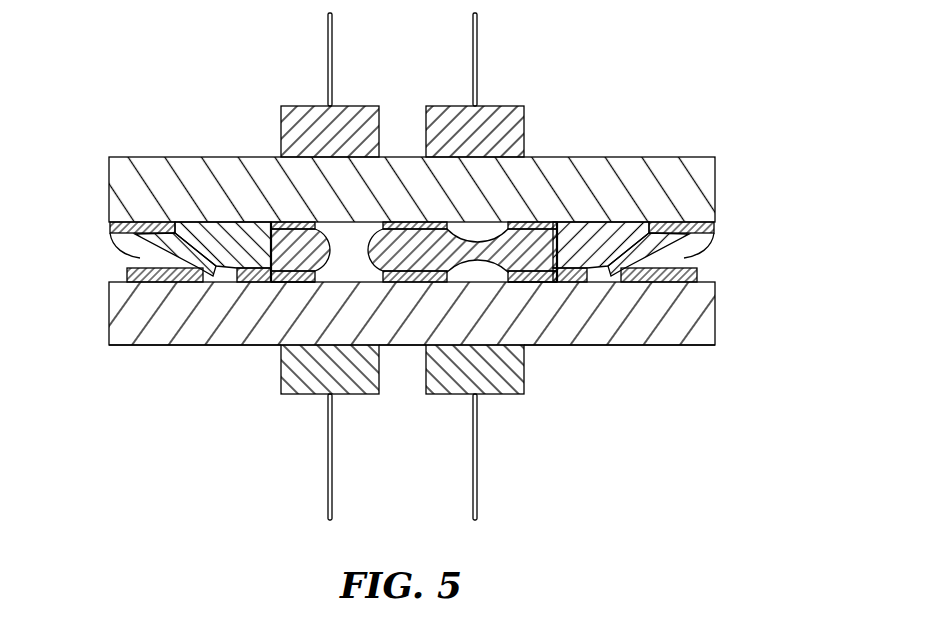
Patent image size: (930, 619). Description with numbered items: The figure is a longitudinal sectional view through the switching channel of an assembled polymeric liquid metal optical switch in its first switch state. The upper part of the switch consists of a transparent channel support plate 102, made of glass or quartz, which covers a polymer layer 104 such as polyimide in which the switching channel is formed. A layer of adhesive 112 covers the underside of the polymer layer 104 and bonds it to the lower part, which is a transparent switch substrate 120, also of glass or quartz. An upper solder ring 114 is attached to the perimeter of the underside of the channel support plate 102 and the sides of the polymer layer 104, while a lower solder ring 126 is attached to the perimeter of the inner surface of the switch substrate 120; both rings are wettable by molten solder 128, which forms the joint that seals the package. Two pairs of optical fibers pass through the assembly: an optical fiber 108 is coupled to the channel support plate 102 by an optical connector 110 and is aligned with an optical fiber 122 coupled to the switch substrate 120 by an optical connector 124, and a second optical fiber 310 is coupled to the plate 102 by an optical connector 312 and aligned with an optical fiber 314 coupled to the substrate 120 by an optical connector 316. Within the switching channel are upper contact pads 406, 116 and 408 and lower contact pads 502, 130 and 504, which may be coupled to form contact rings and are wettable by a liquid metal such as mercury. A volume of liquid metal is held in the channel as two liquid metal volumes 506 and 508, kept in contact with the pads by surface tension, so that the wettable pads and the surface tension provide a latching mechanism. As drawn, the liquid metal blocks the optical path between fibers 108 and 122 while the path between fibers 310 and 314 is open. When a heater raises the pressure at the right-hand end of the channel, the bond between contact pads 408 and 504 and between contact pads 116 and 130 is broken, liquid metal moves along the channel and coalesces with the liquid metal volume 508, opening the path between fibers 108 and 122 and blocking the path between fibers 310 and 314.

The transparent channel support plate 102 is at (700, 157).
The polymer layer 104 is at (198, 230).
The optical fiber 108 is at (478, 68).
The optical connector 110 is at (463, 106).
The layer of adhesive 112 is at (188, 345).
The upper solder ring 114 is at (110, 224).
The upper contact pad 116 is at (412, 229).
The transparent switch substrate 120 is at (717, 344).
The optical fiber 122 is at (478, 439).
The optical connector 124 is at (458, 395).
The lower solder ring 126 is at (124, 277).
The molten solder 128 is at (127, 258).
The wettable contact pad 130 is at (403, 346).
The second optical fiber 310 is at (333, 66).
The optical connector 312 is at (293, 106).
The optical fiber 314 is at (333, 439).
The optical connector 316 is at (300, 396).
The upper contact pad 406 is at (279, 253).
The upper contact pad 408 is at (537, 253).
The lower contact pad 502 is at (282, 282).
The lower contact pad 504 is at (533, 282).
The liquid metal volume 506 is at (562, 282).
The liquid metal volume 508 is at (222, 232).